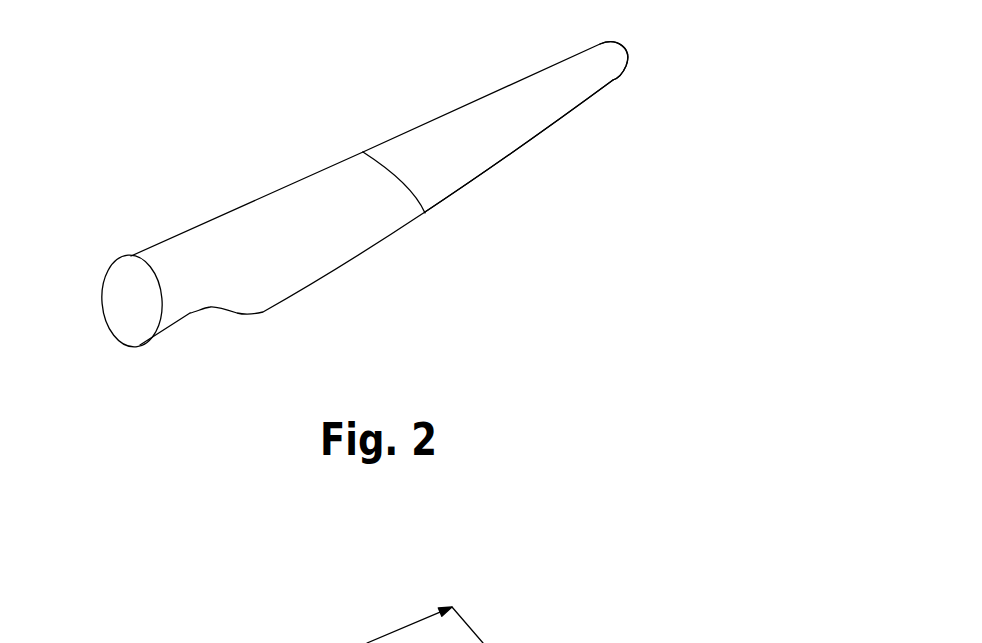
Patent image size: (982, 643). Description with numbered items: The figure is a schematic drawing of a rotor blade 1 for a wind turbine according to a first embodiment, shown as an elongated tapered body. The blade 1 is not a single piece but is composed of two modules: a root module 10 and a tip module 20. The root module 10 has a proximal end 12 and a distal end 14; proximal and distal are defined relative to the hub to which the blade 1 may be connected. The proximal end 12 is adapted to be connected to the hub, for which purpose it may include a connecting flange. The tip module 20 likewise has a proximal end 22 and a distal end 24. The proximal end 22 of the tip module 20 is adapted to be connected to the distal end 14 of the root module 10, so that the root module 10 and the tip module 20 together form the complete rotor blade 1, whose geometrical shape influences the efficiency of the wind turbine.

The rotor blade 1 is at (178, 126).
The root module 10 is at (303, 265).
The proximal end of root module 12 is at (137, 375).
The distal end of root module 14 is at (450, 232).
The tip module 20 is at (528, 118).
The proximal end of tip module 22 is at (340, 143).
The distal end of tip module 24 is at (654, 65).